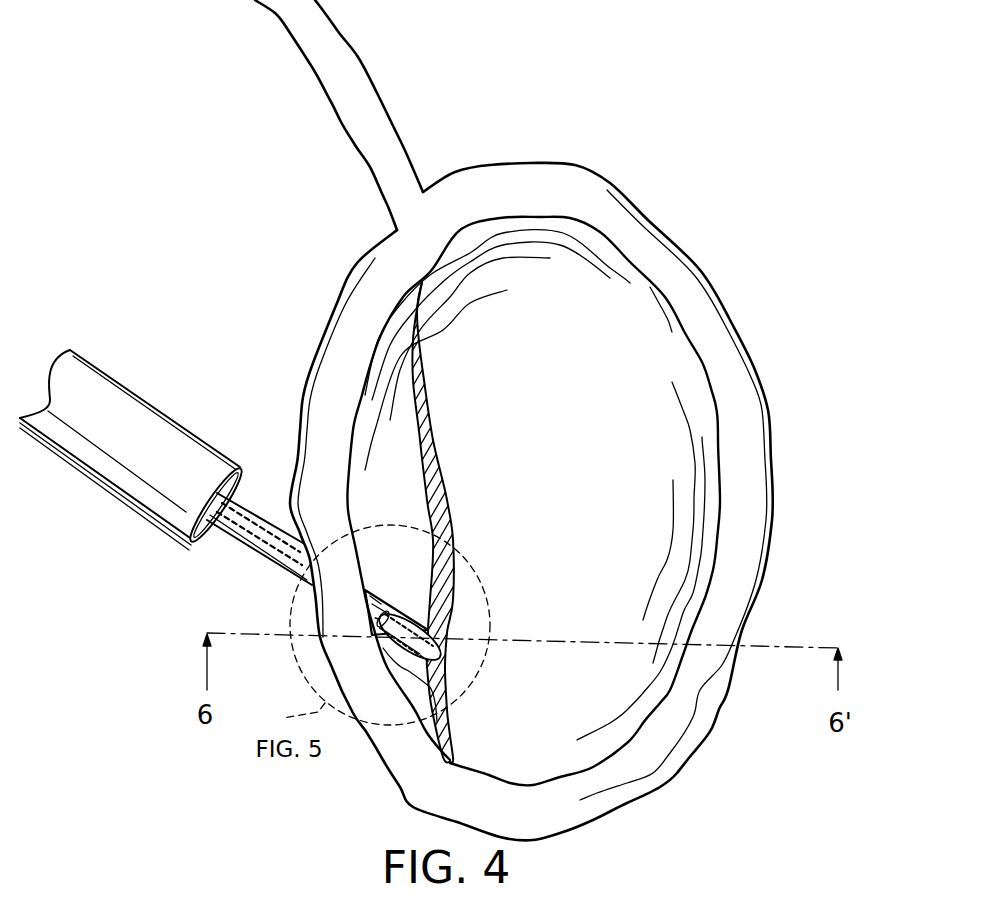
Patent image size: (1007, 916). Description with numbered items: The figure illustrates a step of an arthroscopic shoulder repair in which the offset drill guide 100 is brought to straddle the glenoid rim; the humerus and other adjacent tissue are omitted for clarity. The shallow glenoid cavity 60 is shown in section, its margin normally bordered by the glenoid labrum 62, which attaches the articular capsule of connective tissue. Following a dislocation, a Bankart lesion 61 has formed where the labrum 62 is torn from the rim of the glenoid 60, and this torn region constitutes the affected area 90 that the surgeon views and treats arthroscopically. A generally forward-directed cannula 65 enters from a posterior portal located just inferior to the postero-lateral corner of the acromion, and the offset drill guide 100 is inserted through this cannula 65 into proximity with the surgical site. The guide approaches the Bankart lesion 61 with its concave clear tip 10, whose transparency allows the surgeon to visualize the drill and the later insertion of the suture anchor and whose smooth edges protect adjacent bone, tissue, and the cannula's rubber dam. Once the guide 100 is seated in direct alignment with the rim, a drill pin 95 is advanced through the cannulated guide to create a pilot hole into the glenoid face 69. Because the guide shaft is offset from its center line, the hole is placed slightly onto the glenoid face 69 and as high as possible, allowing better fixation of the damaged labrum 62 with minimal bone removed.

The concave clear tip 10 is at (450, 652).
The glenoid cavity 60 is at (672, 434).
The Bankart lesion 61 is at (410, 440).
The glenoid labrum 62 is at (348, 373).
The cannula 65 is at (120, 413).
The glenoid face 69 is at (673, 655).
The affected area 90 is at (266, 586).
The drill pin 95 is at (214, 478).
The offset drill guide 100 is at (256, 504).